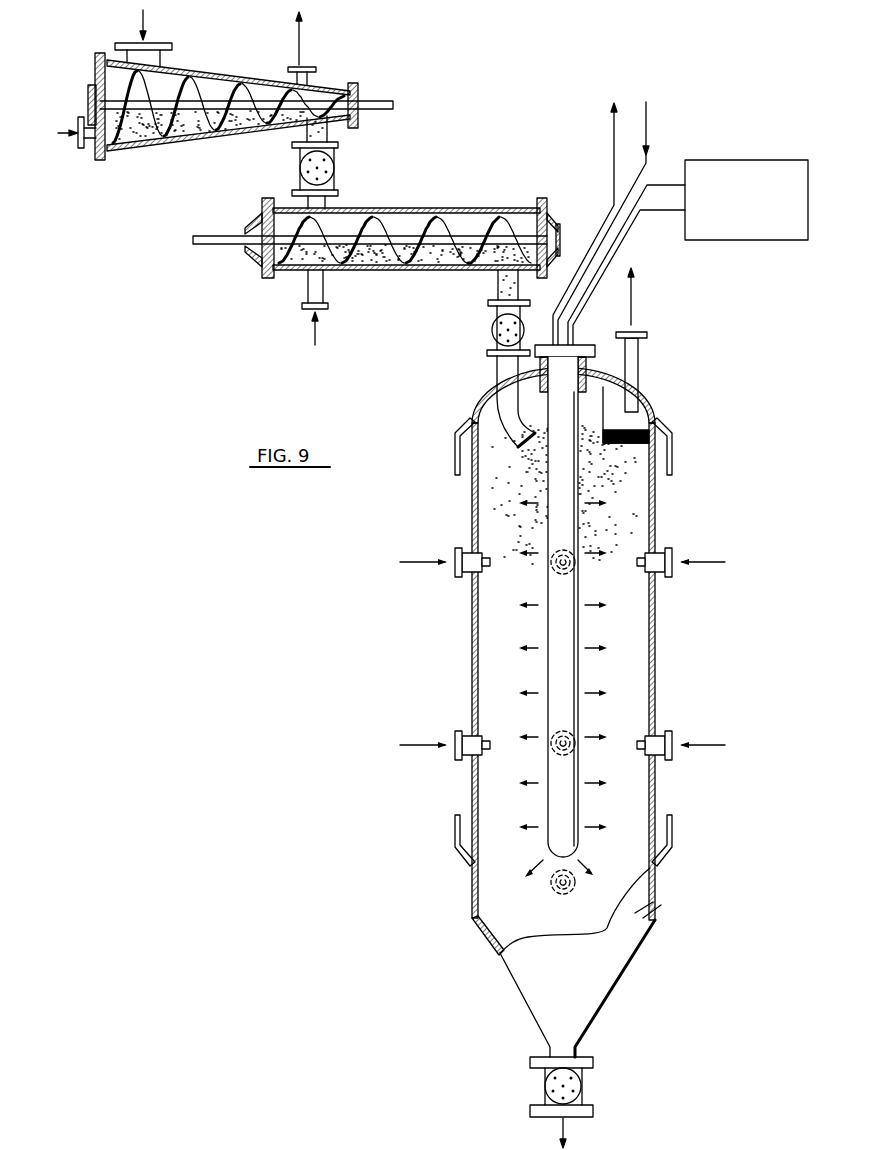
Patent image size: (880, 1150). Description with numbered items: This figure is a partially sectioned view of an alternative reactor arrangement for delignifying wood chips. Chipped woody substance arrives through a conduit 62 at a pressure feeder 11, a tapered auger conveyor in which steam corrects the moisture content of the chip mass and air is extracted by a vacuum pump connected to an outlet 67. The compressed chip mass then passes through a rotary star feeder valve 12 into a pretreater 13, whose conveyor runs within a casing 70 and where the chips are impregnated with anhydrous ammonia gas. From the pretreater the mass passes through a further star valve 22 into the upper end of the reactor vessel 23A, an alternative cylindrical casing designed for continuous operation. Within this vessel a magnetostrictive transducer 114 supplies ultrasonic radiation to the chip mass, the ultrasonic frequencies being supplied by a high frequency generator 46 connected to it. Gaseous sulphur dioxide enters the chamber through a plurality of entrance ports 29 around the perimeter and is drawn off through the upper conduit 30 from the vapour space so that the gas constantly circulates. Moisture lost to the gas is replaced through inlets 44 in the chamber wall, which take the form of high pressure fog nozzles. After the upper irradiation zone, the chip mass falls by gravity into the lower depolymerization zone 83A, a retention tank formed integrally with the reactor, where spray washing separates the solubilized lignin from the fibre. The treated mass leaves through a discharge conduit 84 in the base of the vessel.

The pressure feeder 11 is at (216, 72).
The conduit 62 is at (147, 22).
The outlet 67 is at (310, 80).
The rotary star feeder valve 12 is at (328, 173).
The pretreater 13 is at (408, 210).
The star valve 22 is at (493, 328).
The high frequency generator 46 is at (784, 209).
The conduit 30 is at (636, 333).
The reactor vessel 23A is at (656, 505).
The magnetostrictive transducer 114 is at (564, 400).
The entrance ports 29 is at (467, 580).
The casing 70 is at (673, 846).
The inlets 44 is at (550, 888).
The lower depolymerization zone 83A is at (511, 970).
The discharge conduit 84 is at (548, 1083).